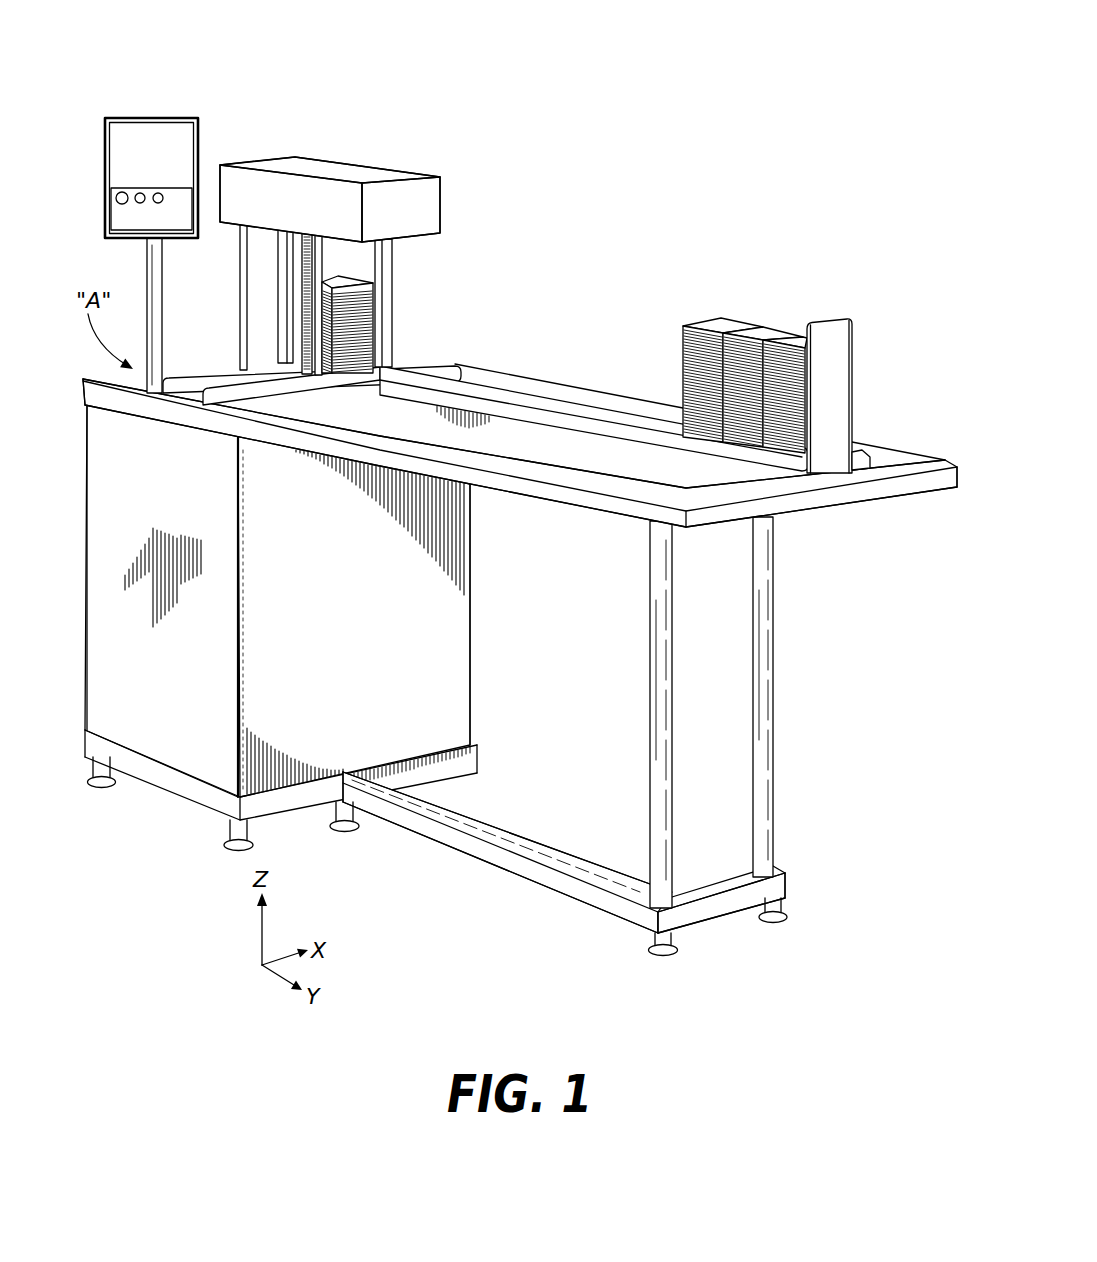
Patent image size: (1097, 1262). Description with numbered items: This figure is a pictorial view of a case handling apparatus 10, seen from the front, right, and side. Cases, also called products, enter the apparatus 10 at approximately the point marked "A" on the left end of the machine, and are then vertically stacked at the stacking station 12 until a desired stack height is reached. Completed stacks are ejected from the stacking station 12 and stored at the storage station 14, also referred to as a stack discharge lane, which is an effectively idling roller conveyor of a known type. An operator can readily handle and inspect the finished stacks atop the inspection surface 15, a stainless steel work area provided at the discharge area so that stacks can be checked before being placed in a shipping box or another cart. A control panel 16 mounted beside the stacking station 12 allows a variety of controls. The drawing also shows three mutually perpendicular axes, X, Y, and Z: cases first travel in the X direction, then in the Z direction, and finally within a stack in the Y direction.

The case handling apparatus 10 is at (634, 76).
The stacking station 12 is at (354, 152).
The storage station 14 is at (745, 292).
The inspection surface 15 is at (596, 470).
The control panel 16 is at (162, 116).